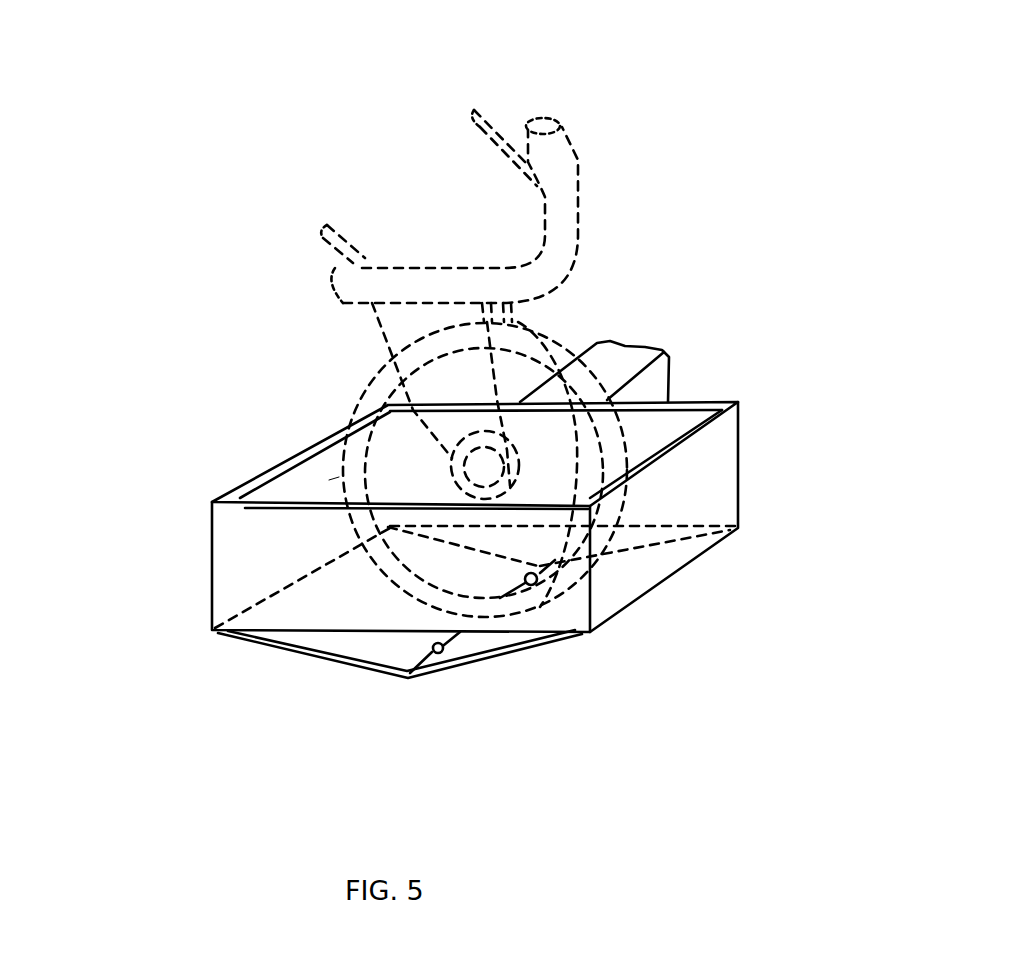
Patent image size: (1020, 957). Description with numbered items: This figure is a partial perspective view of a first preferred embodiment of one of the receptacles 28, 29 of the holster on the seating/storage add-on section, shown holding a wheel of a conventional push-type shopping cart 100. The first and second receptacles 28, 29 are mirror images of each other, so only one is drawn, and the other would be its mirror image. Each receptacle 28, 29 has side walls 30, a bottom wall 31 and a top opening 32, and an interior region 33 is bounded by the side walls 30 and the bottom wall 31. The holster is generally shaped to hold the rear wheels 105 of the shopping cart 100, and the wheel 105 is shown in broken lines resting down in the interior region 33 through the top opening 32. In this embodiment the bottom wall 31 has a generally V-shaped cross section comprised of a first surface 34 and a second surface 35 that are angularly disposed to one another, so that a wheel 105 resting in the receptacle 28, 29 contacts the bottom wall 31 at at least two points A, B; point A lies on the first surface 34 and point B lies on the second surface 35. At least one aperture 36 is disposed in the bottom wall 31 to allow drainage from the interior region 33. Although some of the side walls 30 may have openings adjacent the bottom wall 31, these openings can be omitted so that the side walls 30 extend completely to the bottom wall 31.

The first receptacle 28 is at (140, 211).
The second receptacle 29 is at (488, 404).
The side walls 30 is at (267, 503).
The bottom wall 31 is at (368, 662).
The top opening 32 is at (638, 431).
The interior region 33 is at (328, 478).
The first surface 34 is at (396, 659).
The second surface 35 is at (483, 660).
The aperture 36 is at (438, 653).
The shopping cart 100 is at (563, 153).
The rear wheels 105 is at (553, 397).
The point A is at (408, 599).
The point B is at (541, 588).